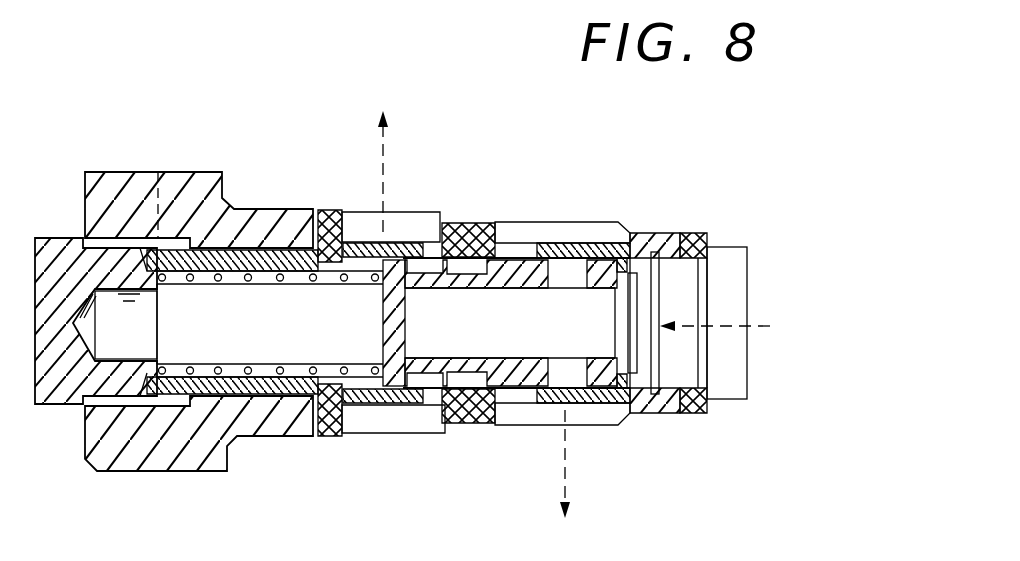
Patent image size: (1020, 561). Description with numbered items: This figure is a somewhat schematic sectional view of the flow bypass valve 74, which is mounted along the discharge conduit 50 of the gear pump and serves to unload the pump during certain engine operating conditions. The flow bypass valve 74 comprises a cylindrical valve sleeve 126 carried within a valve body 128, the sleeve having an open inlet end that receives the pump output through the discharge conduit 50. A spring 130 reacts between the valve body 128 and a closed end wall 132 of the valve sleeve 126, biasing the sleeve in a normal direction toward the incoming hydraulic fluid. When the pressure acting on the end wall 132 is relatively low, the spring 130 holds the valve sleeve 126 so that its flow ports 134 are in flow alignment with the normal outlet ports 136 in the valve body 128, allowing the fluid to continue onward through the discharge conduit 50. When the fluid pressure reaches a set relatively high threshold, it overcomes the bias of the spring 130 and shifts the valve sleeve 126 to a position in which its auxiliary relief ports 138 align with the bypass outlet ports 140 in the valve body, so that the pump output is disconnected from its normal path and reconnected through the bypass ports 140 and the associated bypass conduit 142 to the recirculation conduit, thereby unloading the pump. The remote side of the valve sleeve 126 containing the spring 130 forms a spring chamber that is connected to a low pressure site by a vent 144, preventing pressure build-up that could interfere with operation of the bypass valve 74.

The flow bypass valve 74 is at (200, 162).
The vent 144 is at (137, 197).
The spring 130 is at (260, 373).
The valve body 128 is at (658, 237).
The normal outlet ports 136 is at (440, 218).
The flow ports 134 is at (497, 245).
The auxiliary relief ports 138 is at (590, 247).
The bypass outlet ports 140 is at (515, 400).
The closed end wall 132 is at (405, 318).
The cylindrical valve sleeve 126 is at (507, 360).
The discharge conduit 50 is at (383, 152).
The bypass conduit 142 is at (567, 467).